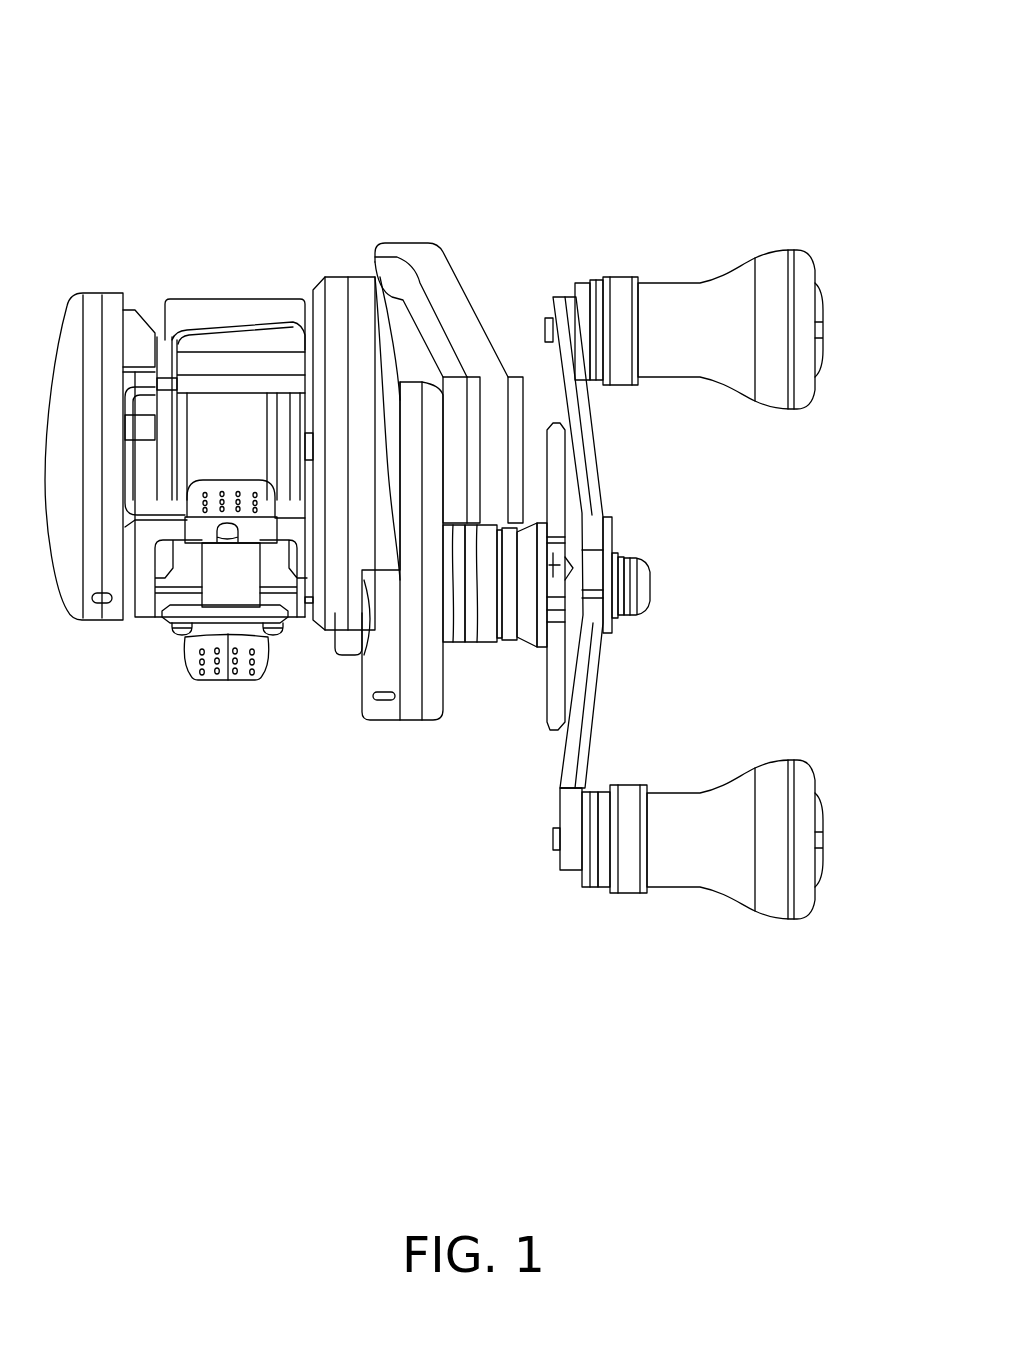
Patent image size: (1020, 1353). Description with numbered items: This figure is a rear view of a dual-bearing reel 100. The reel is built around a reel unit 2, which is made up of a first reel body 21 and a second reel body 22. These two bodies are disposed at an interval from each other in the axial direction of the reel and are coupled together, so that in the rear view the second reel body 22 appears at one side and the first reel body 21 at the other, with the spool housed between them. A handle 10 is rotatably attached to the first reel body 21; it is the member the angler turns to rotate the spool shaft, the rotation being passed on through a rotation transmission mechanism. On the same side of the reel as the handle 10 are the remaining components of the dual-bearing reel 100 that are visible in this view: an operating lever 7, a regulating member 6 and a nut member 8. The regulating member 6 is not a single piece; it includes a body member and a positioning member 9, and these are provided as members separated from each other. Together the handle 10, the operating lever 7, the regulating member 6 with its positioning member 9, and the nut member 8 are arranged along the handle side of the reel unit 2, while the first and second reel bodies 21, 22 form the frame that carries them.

The dual-bearing reel 100 is at (178, 127).
The reel unit 2 is at (335, 250).
The first reel body 21 is at (330, 276).
The second reel body 22 is at (93, 290).
The regulating member 6 is at (527, 490).
The operating lever 7 is at (443, 242).
The nut member 8 is at (458, 645).
The positioning member 9 is at (482, 645).
The handle 10 is at (800, 245).